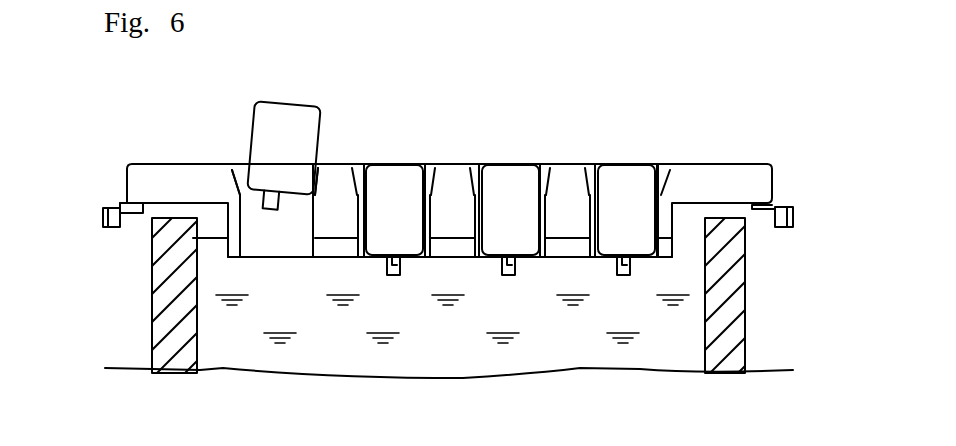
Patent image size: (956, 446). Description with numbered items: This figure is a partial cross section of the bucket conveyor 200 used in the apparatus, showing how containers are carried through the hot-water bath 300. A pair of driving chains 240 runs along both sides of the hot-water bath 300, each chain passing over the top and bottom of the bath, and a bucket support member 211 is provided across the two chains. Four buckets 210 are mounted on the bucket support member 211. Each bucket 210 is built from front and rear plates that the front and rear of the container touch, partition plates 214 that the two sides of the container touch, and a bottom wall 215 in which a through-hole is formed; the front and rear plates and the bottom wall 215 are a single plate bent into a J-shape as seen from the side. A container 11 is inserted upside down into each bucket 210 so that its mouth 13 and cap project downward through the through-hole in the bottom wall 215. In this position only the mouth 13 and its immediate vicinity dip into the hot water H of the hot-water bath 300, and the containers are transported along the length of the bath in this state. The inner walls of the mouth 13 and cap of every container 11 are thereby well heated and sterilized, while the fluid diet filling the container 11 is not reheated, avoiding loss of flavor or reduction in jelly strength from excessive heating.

The bucket conveyor 200 is at (781, 166).
The bucket 210 is at (243, 142).
The bucket support member 211 is at (699, 182).
The partition plate 214 is at (237, 197).
The bottom wall 215 is at (266, 258).
The driving chain 240 is at (118, 229).
The hot-water bath 300 is at (750, 325).
The container 11 is at (287, 122).
The mouth 13 is at (400, 276).
The hot water H is at (681, 344).